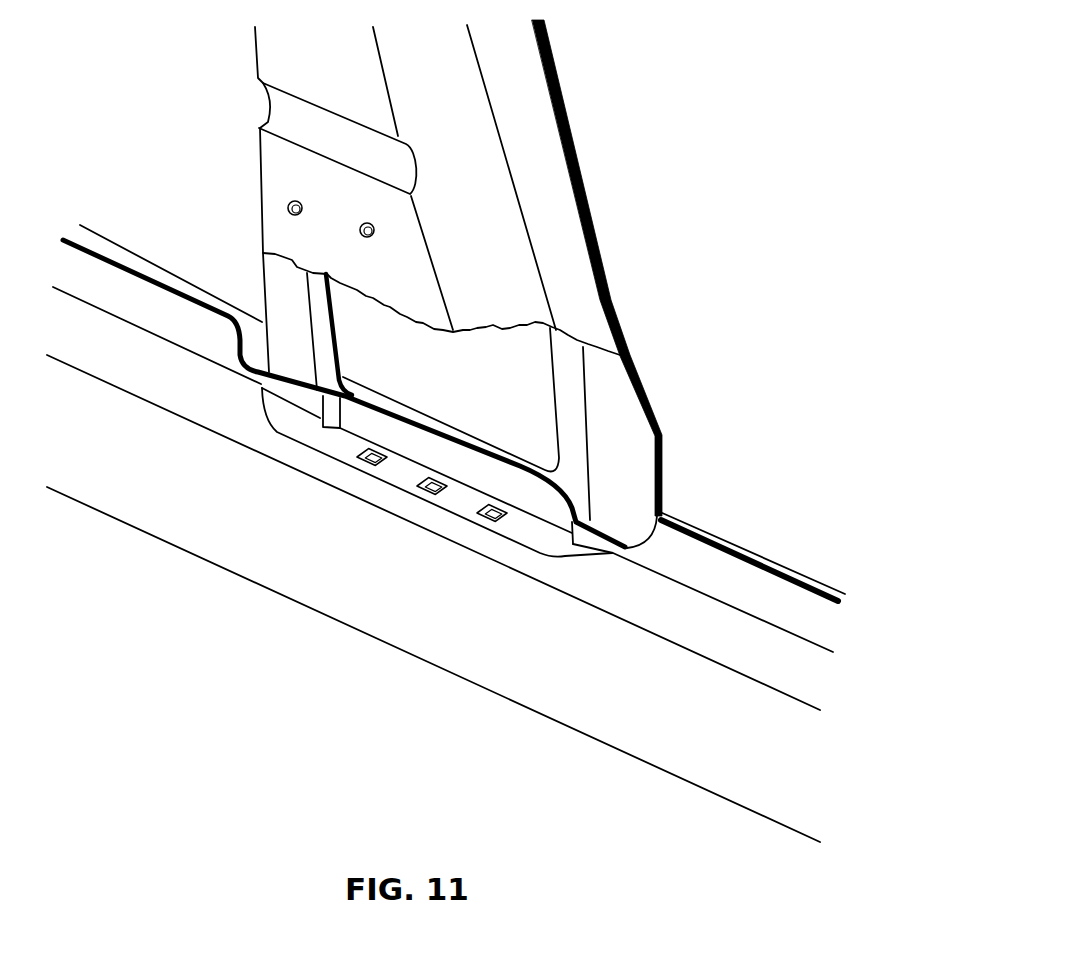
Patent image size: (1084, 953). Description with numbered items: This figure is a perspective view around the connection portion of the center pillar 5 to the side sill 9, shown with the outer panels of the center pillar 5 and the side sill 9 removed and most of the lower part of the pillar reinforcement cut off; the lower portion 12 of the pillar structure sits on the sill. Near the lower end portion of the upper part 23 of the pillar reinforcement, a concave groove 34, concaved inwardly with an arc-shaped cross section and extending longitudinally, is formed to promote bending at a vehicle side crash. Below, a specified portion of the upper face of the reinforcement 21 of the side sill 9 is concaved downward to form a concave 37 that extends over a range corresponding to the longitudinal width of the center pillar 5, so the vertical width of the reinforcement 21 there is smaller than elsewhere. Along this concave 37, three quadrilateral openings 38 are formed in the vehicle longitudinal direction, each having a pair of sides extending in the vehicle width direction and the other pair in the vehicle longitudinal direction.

The center pillar 5 is at (621, 130).
The upper part 23 is at (490, 247).
The concave groove 34 is at (313, 135).
The pillar lower reinforcement 12 is at (627, 460).
The concave 37 is at (417, 472).
The openings 38 is at (490, 518).
The reinforcement 21 is at (215, 522).
The side sill 9 is at (435, 686).